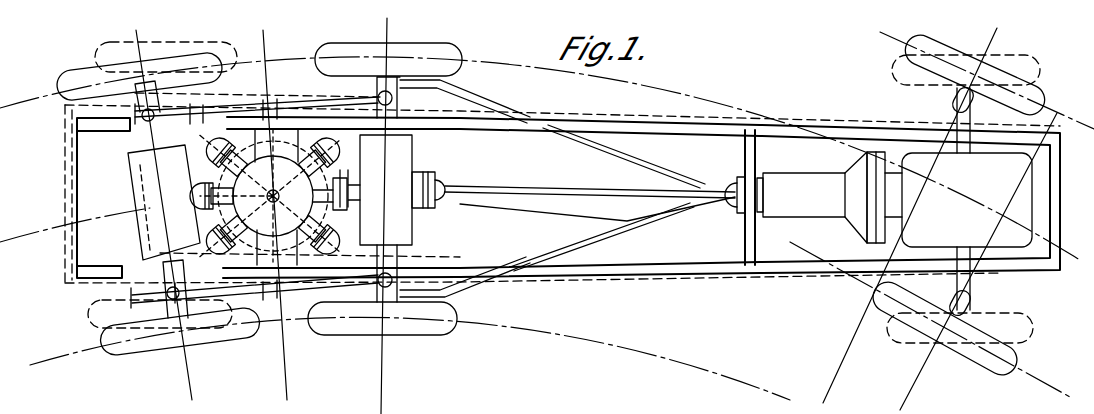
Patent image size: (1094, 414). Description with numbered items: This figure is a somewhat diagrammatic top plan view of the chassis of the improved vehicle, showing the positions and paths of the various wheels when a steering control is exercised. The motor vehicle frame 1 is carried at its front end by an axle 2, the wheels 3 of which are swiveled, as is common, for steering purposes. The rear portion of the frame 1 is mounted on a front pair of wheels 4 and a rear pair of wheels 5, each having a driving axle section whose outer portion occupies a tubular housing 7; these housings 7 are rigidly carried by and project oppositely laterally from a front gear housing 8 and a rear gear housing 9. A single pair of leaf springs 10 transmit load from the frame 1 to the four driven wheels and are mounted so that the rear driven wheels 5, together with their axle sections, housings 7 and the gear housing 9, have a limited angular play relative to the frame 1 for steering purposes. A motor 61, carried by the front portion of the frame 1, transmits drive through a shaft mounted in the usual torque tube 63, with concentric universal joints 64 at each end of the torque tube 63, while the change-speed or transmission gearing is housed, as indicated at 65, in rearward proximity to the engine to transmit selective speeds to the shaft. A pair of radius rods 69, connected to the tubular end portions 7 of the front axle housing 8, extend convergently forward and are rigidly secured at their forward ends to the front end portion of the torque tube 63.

The motor vehicle frame 1 is at (733, 274).
The axle 2 is at (956, 110).
The wheels 3 is at (1040, 96).
The front pair of wheels 4 is at (455, 50).
The rear pair of wheels 5 is at (208, 62).
The tubular housings 7 is at (462, 95).
The front gear housing 8 is at (413, 150).
The rear gear housing 9 is at (128, 162).
The leaf springs 10 is at (298, 96).
The motor 61 is at (1010, 162).
The torque tube 63 is at (550, 184).
The universal joints 64 is at (446, 185).
The change-speed gearing housing 65 is at (820, 178).
The radius rods 69 is at (626, 192).